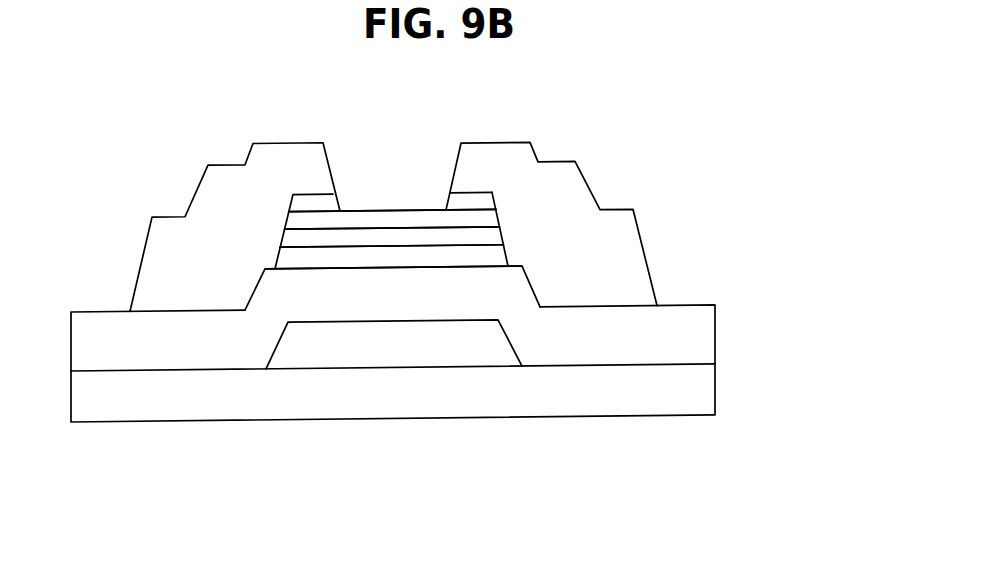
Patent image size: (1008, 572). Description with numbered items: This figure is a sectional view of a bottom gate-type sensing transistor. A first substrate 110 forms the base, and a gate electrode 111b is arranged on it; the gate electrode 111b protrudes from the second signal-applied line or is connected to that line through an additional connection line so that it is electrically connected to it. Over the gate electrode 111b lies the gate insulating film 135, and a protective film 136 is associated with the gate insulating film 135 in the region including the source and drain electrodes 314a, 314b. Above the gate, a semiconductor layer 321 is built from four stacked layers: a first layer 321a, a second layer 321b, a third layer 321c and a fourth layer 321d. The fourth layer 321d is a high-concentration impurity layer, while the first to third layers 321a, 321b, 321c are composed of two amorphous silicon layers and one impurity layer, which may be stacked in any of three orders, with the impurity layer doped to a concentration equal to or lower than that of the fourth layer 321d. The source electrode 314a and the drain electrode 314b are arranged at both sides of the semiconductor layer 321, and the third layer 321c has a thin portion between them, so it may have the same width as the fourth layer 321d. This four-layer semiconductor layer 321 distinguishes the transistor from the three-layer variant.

The first substrate 110 is at (710, 388).
The gate electrode 111b is at (392, 347).
The gate insulating film 135 is at (710, 328).
The protective film 136 is at (710, 328).
The semiconductor layer 321 is at (808, 138).
The first layer 321a is at (497, 255).
The second layer 321b is at (493, 238).
The third layer 321c is at (493, 220).
The fourth layer 321d is at (320, 202).
The source electrode 314a is at (283, 148).
The drain electrode 314b is at (497, 148).